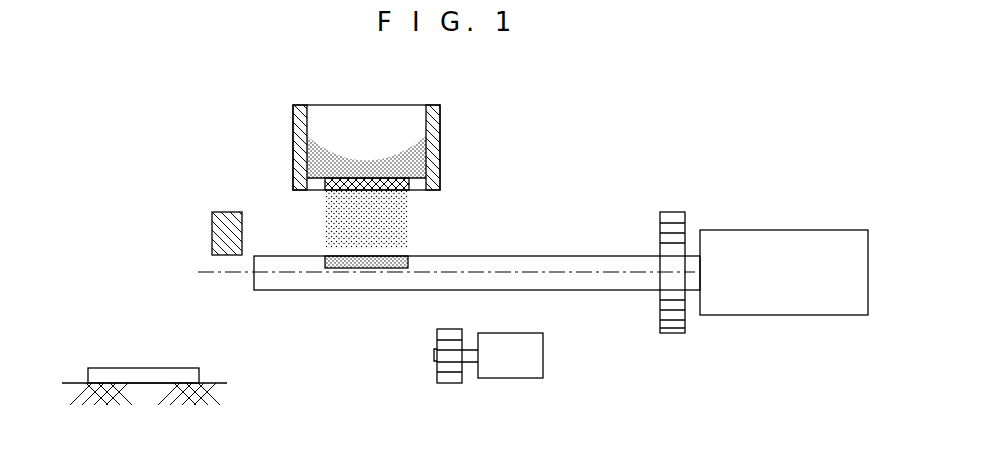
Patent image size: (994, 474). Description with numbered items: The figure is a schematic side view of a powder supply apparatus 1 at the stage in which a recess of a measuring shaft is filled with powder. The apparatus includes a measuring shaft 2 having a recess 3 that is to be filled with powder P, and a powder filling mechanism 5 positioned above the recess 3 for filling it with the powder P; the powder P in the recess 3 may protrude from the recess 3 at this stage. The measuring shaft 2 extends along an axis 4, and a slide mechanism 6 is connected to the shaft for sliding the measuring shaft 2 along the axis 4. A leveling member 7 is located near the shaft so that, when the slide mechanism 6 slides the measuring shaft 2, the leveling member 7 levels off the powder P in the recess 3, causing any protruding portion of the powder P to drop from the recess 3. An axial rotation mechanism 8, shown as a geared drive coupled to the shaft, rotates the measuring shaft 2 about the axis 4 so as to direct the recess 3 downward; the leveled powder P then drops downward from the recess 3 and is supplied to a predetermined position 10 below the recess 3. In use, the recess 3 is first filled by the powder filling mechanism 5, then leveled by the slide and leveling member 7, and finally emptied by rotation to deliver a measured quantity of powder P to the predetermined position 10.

The powder supply apparatus 1 is at (785, 90).
The measuring shaft 2 is at (283, 300).
The recess 3 is at (348, 251).
The axis 4 is at (232, 273).
The powder filling mechanism 5 is at (450, 118).
The slide mechanism 6 is at (784, 229).
The leveling member 7 is at (225, 202).
The axial rotation mechanism 8 is at (470, 391).
The predetermined position 10 is at (87, 362).
The powder P is at (407, 246).